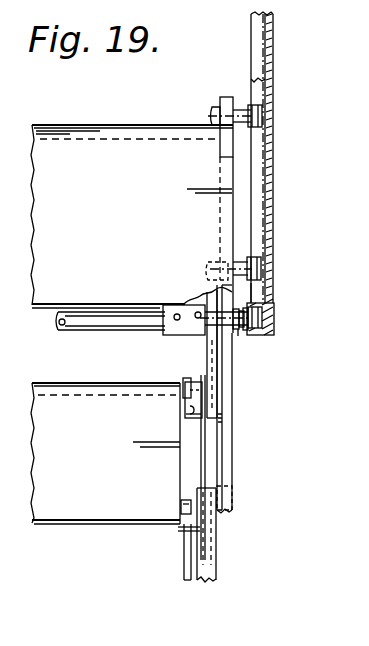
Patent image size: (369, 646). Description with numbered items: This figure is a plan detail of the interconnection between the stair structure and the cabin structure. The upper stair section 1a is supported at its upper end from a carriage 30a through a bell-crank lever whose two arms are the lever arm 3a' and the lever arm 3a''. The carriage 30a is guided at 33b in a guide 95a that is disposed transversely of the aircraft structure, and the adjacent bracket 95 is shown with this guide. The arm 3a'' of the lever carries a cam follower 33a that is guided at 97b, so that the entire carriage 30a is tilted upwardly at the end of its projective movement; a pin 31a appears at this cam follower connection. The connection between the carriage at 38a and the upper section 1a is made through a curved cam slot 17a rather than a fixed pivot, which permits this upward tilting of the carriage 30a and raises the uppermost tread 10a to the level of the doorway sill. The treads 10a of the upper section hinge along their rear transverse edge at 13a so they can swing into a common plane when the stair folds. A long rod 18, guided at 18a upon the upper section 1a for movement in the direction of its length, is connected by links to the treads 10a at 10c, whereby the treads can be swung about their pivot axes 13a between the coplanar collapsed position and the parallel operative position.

The upper stair section 1a is at (214, 433).
The lever arm 3a' is at (144, 302).
The lever arm 3a'' is at (244, 354).
The tread 10a is at (62, 497).
The link connection point 10c is at (181, 508).
The tread hinge 13a is at (185, 383).
The curved cam slot 17a is at (216, 558).
The long rod 18 is at (183, 565).
The rod guide 18a is at (179, 533).
The carriage 30a is at (226, 451).
The pin 31a is at (238, 330).
The cam follower 33a is at (274, 317).
The carriage guide element 33b is at (264, 112).
The carriage connection 38a is at (218, 517).
The bracket 95 is at (257, 292).
The guide 95a is at (255, 142).
The cam follower guide 97b is at (247, 330).